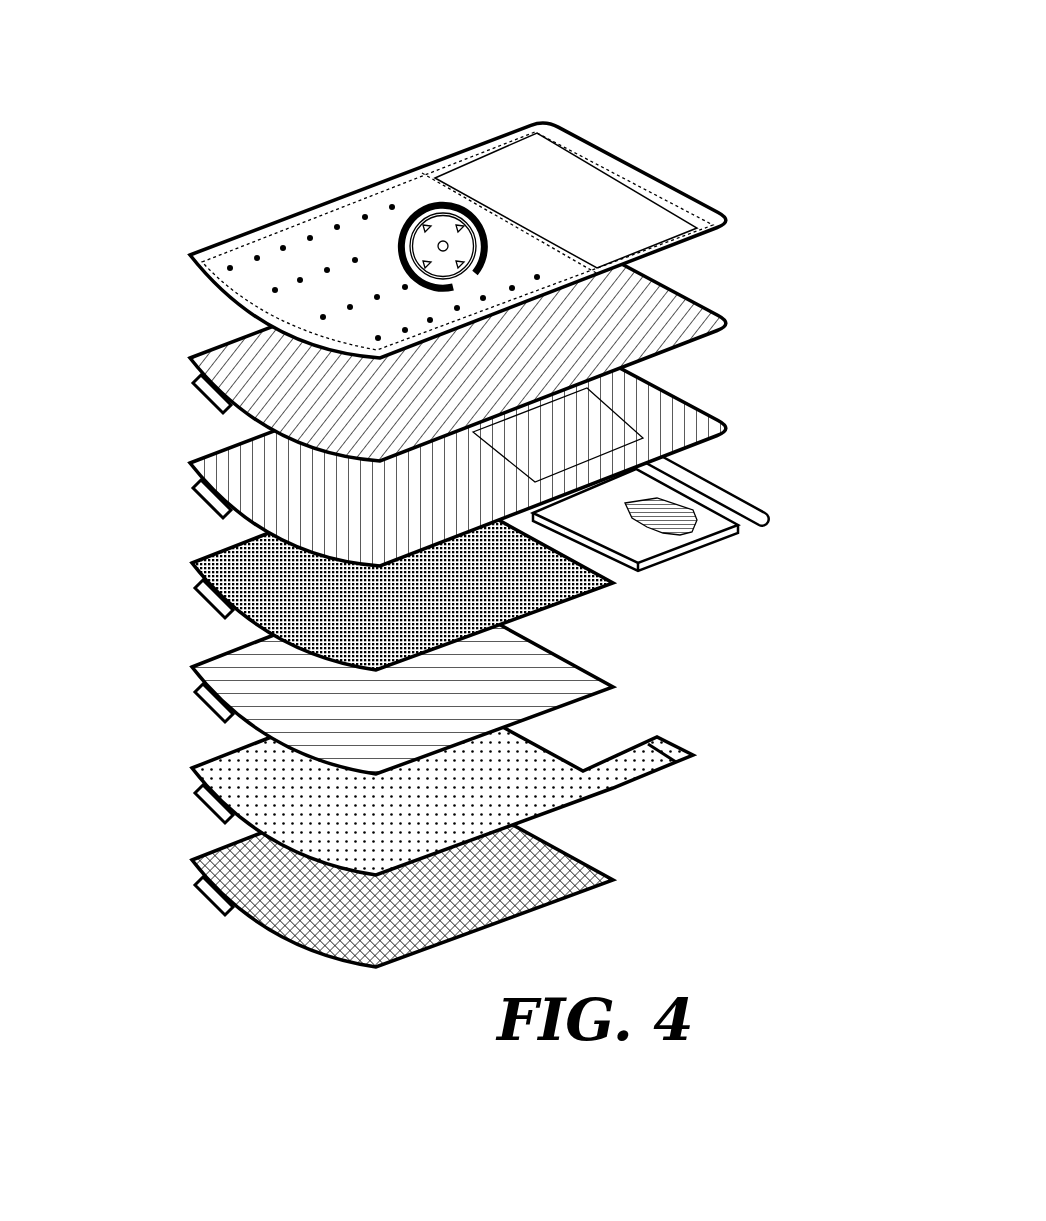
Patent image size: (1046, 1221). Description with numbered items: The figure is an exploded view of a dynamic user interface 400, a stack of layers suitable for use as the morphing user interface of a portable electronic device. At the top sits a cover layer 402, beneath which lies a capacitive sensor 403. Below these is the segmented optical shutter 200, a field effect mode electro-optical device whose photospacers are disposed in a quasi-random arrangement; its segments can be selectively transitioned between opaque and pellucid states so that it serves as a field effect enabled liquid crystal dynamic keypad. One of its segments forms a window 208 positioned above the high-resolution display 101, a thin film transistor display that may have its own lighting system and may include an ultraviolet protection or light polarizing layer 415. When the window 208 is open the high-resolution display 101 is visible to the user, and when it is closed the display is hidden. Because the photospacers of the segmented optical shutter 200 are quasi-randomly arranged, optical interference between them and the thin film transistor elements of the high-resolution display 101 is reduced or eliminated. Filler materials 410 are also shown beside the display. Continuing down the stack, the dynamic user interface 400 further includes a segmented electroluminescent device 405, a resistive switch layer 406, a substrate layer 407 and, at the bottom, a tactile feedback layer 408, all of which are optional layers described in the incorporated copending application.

The dynamic user interface 400 is at (199, 108).
The cover layer 402 is at (625, 165).
The capacitive sensor 403 is at (680, 300).
The segmented optical shutter 200 is at (682, 413).
The window 208 is at (500, 453).
The filler materials 410 is at (707, 472).
The ultraviolet protection or light polarizing layer 415 is at (650, 548).
The high-resolution display 101 is at (728, 502).
The segmented electroluminescent device 405 is at (223, 550).
The resistive switch layer 406 is at (228, 665).
The substrate layer 407 is at (230, 785).
The tactile feedback layer 408 is at (217, 850).